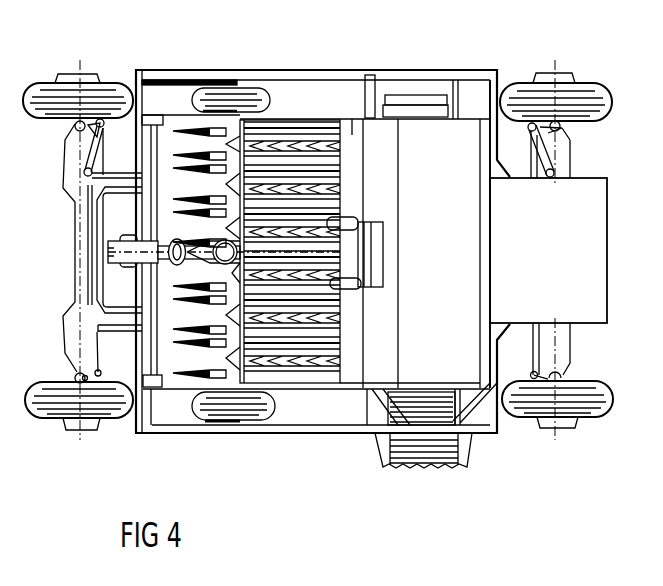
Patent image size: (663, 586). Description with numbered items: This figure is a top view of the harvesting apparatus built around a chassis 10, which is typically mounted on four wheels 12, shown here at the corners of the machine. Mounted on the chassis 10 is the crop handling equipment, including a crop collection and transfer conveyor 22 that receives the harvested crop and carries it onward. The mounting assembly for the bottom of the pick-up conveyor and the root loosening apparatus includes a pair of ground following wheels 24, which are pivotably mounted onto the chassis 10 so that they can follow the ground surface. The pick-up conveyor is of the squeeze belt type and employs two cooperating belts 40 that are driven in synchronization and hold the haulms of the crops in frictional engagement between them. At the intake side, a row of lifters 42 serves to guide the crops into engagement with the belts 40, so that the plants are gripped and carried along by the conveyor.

The chassis 10 is at (313, 70).
The wheels 12 is at (45, 408).
The crop collection and transfer conveyor 22 is at (450, 457).
The ground following wheels 24 is at (216, 409).
The belts 40 is at (293, 365).
The lifters 42 is at (188, 130).